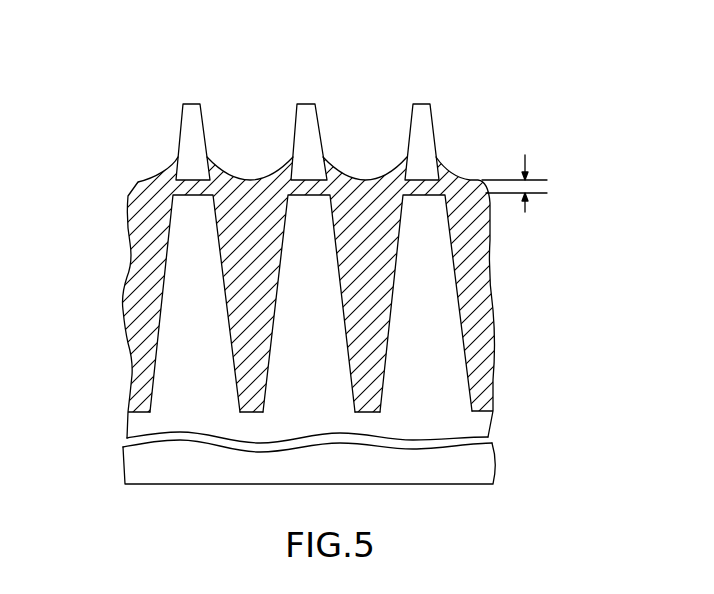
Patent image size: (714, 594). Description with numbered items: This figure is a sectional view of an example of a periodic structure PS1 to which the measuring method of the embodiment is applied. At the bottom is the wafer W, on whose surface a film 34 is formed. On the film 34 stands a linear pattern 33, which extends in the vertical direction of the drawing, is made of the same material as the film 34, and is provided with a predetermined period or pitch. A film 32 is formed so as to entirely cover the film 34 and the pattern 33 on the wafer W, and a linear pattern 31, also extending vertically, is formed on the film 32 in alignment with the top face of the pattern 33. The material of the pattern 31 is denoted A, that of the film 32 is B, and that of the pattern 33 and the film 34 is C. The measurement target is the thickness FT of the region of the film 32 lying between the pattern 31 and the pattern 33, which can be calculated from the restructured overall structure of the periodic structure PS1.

The periodic structure PS1 is at (334, 89).
The linear pattern 31 is at (180, 140).
The film 32 is at (152, 260).
The linear pattern 33 is at (156, 346).
The film 34 is at (460, 422).
The wafer W is at (460, 465).
The thickness FT is at (533, 183).